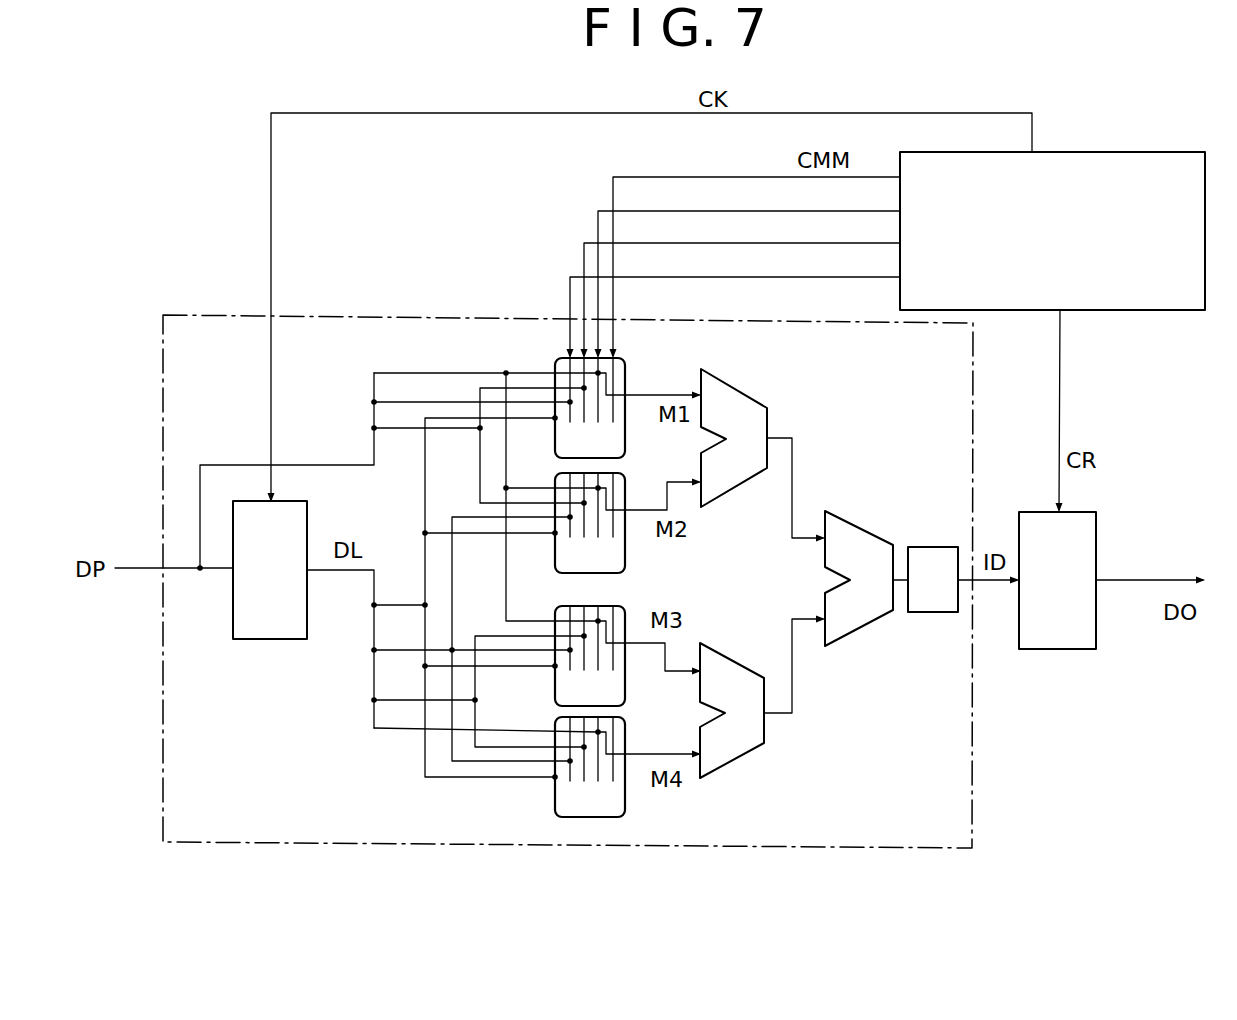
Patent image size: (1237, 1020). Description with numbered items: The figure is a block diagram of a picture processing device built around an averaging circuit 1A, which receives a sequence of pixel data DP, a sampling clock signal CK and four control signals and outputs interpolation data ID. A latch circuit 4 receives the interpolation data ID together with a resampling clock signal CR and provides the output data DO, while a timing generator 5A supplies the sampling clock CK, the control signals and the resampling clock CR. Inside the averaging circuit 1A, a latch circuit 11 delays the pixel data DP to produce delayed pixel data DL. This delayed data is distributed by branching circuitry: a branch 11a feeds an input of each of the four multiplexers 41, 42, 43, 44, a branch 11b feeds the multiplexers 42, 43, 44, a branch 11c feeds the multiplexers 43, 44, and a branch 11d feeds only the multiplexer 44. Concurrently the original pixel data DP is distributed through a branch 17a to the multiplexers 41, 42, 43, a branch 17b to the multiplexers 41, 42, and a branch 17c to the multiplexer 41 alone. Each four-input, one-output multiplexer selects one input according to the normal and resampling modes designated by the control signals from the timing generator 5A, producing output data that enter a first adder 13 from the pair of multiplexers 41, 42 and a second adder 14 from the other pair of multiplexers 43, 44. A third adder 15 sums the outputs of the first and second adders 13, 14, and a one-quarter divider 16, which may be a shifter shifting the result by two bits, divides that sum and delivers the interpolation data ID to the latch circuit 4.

The averaging circuit 1A is at (160, 735).
The latch circuit 4 is at (1060, 650).
The timing generator 5A is at (1130, 152).
The latch circuit 11 is at (270, 640).
The branch 11a is at (397, 604).
The branch 11b is at (395, 650).
The branch 11c is at (395, 703).
The branch 11d is at (398, 731).
The first adder 13 is at (735, 385).
The second adder 14 is at (762, 678).
The third adder 15 is at (863, 528).
The 1/4 divider 16 is at (929, 547).
The branch 17a is at (403, 372).
The branch 17b is at (390, 428).
The branch 17c is at (390, 399).
The multiplexer 41 is at (553, 430).
The multiplexer 42 is at (553, 563).
The multiplexer 43 is at (550, 683).
The multiplexer 44 is at (550, 795).